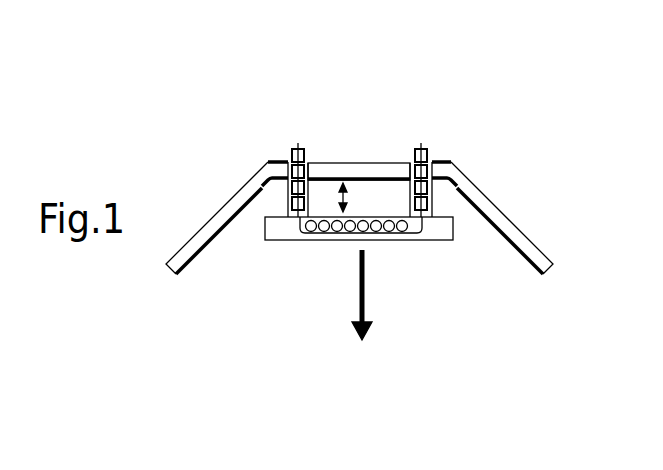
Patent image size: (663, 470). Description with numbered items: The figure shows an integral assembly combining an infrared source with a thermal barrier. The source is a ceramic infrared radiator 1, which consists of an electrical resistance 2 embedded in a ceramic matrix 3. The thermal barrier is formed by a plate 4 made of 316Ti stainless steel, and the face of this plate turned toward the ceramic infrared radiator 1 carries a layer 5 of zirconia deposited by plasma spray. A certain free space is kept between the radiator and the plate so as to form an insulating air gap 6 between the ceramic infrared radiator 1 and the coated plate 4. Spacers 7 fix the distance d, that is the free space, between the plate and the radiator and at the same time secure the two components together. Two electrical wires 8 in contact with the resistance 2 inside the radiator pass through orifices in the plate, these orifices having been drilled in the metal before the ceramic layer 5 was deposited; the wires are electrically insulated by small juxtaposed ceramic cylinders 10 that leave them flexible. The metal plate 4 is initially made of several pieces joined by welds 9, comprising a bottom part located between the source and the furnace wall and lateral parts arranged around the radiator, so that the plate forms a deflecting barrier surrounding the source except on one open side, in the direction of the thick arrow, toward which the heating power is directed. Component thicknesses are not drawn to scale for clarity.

The ceramic infrared radiator 1 is at (298, 250).
The electrical resistance 2 is at (388, 239).
The ceramic matrix 3 is at (440, 225).
The plate 4 is at (502, 200).
The layer of zirconia 5 is at (202, 257).
The insulating air gap 6 is at (382, 194).
The spacers 7 is at (283, 193).
The electrical wires 8 is at (298, 149).
The welds 9 is at (267, 158).
The ceramic cylinders 10 is at (305, 156).
The distance d is at (347, 198).